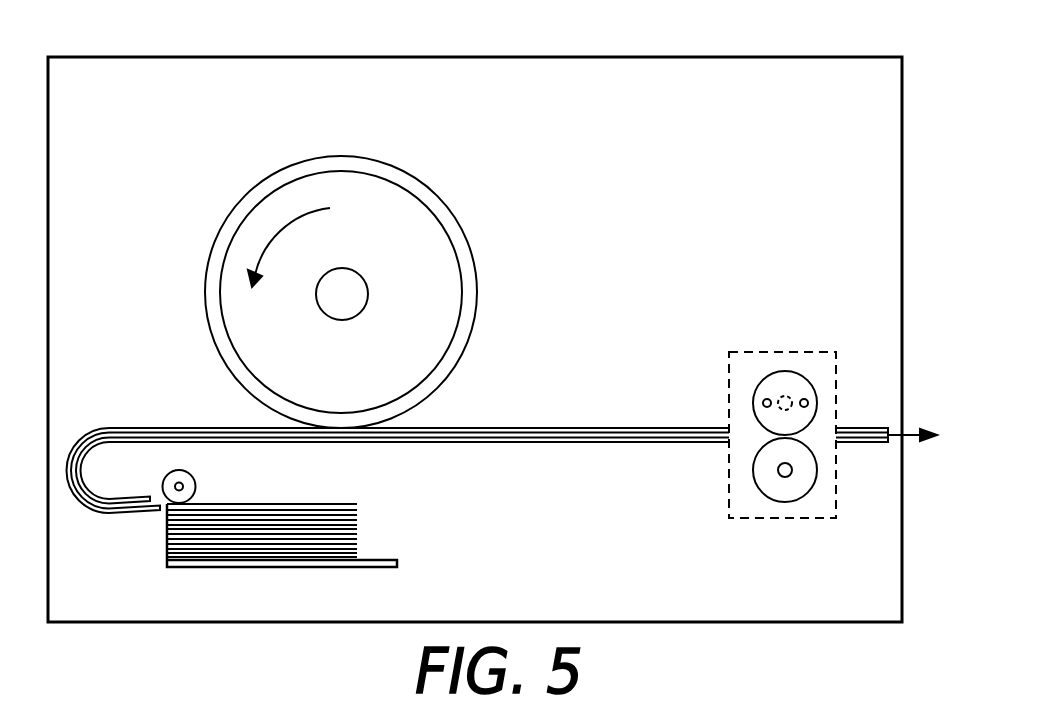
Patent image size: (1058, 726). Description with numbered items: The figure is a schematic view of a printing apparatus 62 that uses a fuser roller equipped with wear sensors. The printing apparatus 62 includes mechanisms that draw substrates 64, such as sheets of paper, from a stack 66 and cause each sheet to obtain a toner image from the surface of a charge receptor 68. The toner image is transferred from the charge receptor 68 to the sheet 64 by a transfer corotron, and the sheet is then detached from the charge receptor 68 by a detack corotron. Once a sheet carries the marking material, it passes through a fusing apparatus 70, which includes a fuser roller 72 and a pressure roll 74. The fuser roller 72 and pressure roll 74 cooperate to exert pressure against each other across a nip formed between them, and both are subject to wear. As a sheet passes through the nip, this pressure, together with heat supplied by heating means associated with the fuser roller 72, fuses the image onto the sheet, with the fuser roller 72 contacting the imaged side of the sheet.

The printing apparatus 62 is at (742, 57).
The substrates 64 is at (142, 427).
The stack 66 is at (353, 538).
The charge receptor 68 is at (447, 208).
The fusing apparatus 70 is at (750, 352).
The fuser roller 72 is at (808, 390).
The pressure roll 74 is at (778, 495).